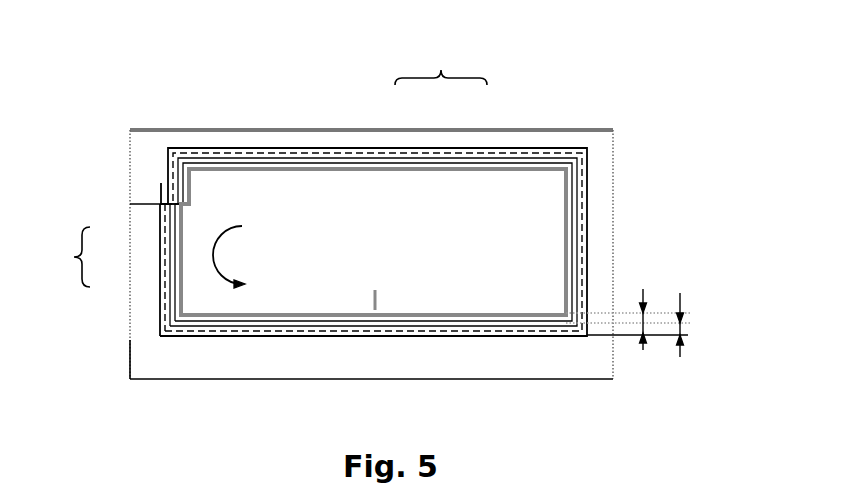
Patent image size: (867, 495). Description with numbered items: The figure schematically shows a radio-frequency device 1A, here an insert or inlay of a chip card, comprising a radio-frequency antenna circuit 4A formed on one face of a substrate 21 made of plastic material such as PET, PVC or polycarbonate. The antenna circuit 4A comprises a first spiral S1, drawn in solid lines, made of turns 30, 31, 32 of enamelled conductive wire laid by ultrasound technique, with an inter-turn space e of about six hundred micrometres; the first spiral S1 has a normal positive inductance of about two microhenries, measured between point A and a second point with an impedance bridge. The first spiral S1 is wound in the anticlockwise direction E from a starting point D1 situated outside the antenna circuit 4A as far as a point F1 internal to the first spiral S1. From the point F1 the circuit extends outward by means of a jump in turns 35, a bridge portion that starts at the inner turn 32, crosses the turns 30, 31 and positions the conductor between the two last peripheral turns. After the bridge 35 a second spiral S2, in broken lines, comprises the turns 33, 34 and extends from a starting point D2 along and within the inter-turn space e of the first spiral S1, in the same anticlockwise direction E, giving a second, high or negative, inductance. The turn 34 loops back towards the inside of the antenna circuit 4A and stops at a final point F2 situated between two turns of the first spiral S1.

The radio-frequency device 1A is at (384, 236).
The substrate 21 is at (343, 254).
The radio-frequency antenna circuit 4A is at (377, 214).
The turn 30 is at (420, 148).
The turn 31 is at (337, 212).
The inner turn 32 is at (373, 209).
The turn 33 is at (129, 267).
The turn 34 is at (332, 242).
The jump in turns (bridge portion) 35 is at (161, 183).
The measurement point A is at (413, 237).
The starting point D1 is at (144, 137).
The starting point D2 is at (105, 206).
The anticlockwise winding direction E is at (229, 257).
The internal point F1 is at (214, 139).
The final point F2 is at (394, 360).
The first spiral S1 is at (441, 65).
The second spiral S2 is at (68, 257).
The inter-turn space e is at (632, 323).